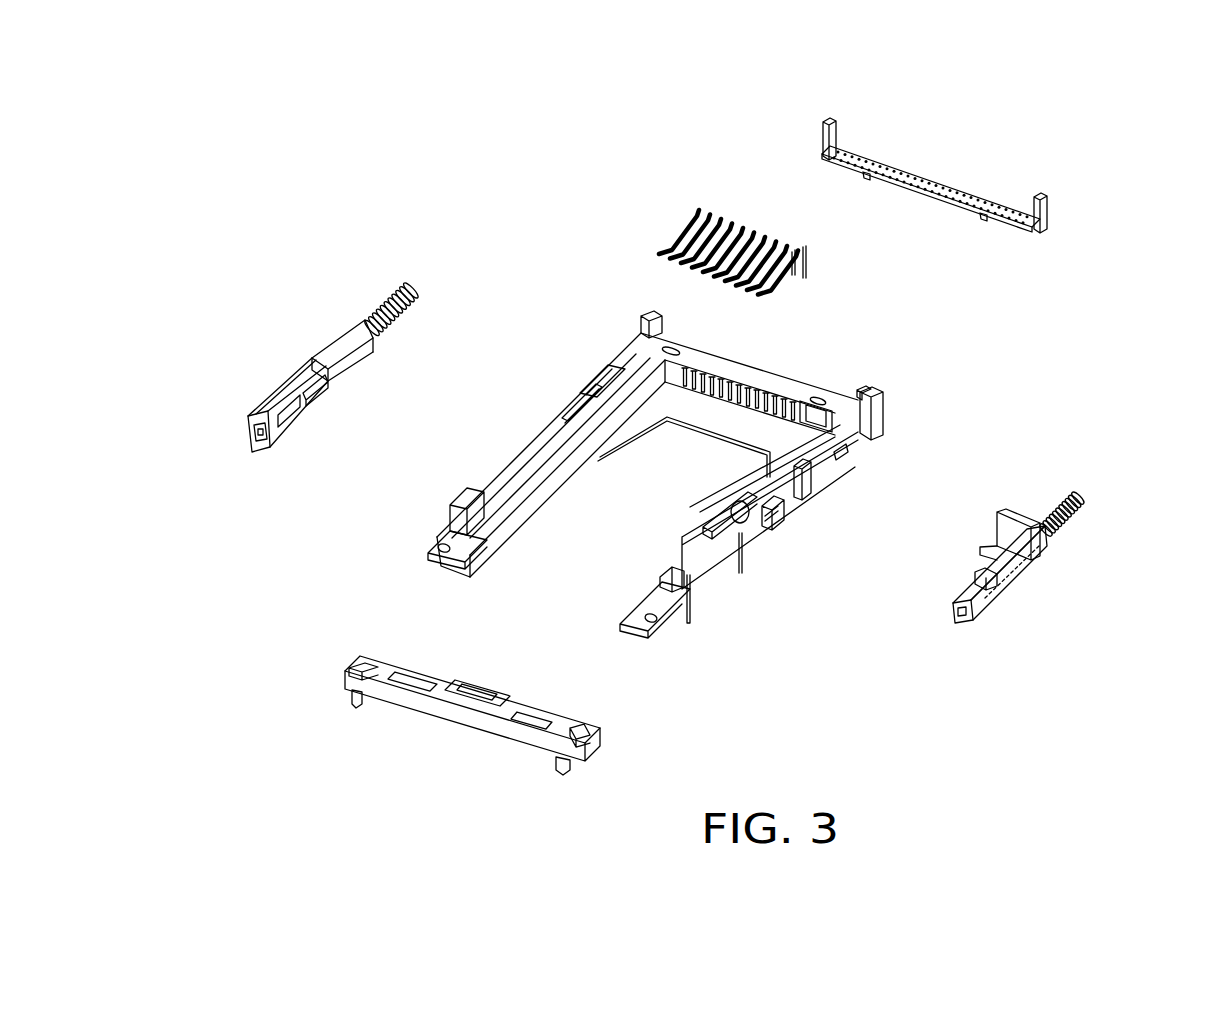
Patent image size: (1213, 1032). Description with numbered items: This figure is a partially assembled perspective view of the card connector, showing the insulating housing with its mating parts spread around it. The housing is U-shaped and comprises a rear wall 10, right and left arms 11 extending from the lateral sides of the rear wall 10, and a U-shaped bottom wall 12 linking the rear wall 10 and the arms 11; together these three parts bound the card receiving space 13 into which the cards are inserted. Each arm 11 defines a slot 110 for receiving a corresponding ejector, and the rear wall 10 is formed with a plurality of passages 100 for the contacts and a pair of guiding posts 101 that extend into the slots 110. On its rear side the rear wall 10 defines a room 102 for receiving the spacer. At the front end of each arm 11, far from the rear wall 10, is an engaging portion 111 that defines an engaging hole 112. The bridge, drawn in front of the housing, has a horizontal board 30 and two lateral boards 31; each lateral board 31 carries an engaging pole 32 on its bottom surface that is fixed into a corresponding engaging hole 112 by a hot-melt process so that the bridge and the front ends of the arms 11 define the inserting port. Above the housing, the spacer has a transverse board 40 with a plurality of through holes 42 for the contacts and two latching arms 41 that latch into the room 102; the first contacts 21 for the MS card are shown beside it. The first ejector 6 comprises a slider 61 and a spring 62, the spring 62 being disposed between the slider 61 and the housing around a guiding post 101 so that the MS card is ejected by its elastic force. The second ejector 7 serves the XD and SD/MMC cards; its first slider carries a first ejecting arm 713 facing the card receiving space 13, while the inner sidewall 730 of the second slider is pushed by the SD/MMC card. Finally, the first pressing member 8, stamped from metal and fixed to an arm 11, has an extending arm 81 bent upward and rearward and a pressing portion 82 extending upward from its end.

The first ejector 6 is at (1022, 578).
The second ejector 7 is at (340, 342).
The first pressing member 8 is at (796, 497).
The rear wall 10 is at (692, 352).
The arms 11 is at (450, 520).
The bottom wall 12 is at (737, 425).
The card receiving space 13 is at (592, 572).
The first contacts 21 is at (808, 252).
The horizontal board 30 is at (480, 722).
The lateral boards 31 is at (350, 688).
The engaging pole 32 is at (367, 705).
The transverse board 40 is at (958, 206).
The latching arms 41 is at (826, 143).
The through holes 42 is at (888, 181).
The slider 61 is at (1010, 523).
The spring 62 is at (1074, 518).
The extending arm 81 is at (770, 518).
The pressing portion 82 is at (770, 530).
The passages 100 is at (743, 379).
The guiding posts 101 is at (618, 385).
The room 102 is at (874, 388).
The slot 110 is at (573, 413).
The engaging portion 111 is at (457, 553).
The engaging hole 112 is at (428, 548).
The first ejecting arm 713 is at (272, 450).
The inner sidewall 730 is at (313, 402).